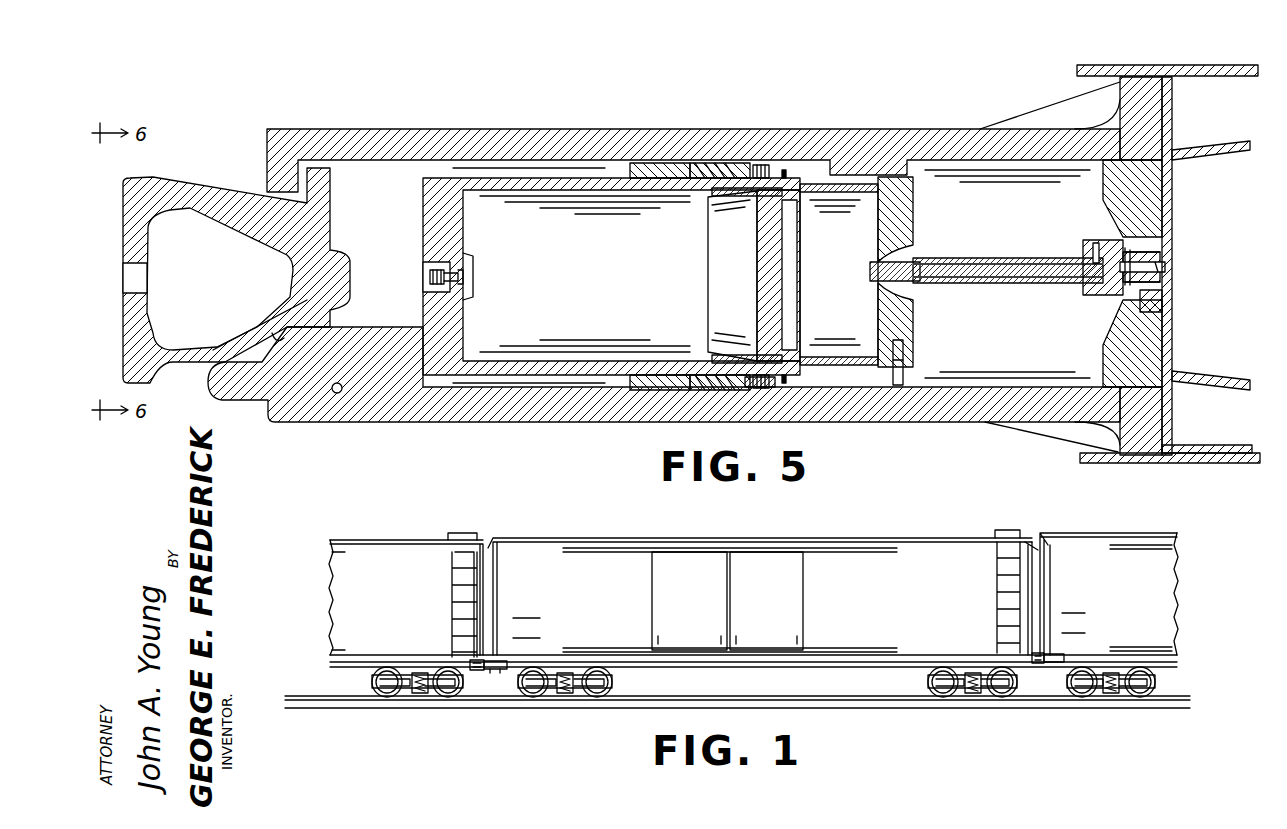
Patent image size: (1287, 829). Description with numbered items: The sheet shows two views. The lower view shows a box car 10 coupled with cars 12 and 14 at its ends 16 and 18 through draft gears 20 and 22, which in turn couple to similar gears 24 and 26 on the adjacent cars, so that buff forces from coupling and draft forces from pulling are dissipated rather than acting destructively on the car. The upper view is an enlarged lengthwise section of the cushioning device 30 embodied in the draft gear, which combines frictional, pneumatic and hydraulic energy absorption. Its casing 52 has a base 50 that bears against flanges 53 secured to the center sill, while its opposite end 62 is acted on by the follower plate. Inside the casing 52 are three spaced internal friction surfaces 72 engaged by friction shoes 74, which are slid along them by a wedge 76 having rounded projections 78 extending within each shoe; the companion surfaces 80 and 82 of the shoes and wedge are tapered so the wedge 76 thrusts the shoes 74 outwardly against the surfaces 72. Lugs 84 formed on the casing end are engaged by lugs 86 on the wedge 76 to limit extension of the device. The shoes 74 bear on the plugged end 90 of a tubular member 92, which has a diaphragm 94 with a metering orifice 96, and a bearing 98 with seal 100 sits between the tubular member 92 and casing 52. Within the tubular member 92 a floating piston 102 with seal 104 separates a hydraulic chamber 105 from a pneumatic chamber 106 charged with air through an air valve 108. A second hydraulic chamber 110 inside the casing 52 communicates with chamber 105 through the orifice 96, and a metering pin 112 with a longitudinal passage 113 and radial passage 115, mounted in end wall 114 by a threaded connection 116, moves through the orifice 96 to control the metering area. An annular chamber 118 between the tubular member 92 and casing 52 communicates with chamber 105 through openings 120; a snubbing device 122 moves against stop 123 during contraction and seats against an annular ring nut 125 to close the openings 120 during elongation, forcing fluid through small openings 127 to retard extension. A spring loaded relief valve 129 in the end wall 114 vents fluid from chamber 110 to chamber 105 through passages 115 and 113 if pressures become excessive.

In FIG. 1, the box car 10 is at (843, 566).
In FIG. 1, the car 12 is at (1088, 553).
In FIG. 1, the car 14 is at (385, 572).
In FIG. 1, the end 16 is at (517, 563).
In FIG. 1, the end 18 is at (968, 552).
In FIG. 1, the draft gear 20 is at (506, 668).
In FIG. 1, the draft gear 22 is at (1033, 662).
In FIG. 1, the gear 24 is at (473, 668).
In FIG. 1, the gear 26 is at (1058, 662).
In FIG. 5, the cushioning device 30 is at (526, 126).
In FIG. 5, the base 50 is at (1153, 130).
In FIG. 5, the casing 52 is at (538, 416).
In FIG. 5, the flanges 53 is at (1173, 113).
In FIG. 5, the end 62 is at (135, 180).
In FIG. 5, the friction surfaces 72 is at (331, 394).
In FIG. 5, the friction shoes 74 is at (267, 390).
In FIG. 5, the wedge 76 is at (169, 362).
In FIG. 5, the rounded projections 78 is at (257, 337).
In FIG. 5, the companion surface 80 is at (252, 366).
In FIG. 5, the companion surface 82 is at (282, 332).
In FIG. 5, the lugs 84 is at (272, 182).
In FIG. 5, the lugs 86 is at (312, 182).
In FIG. 5, the plugged end 90 is at (452, 330).
In FIG. 5, the tubular member 92 is at (565, 183).
In FIG. 5, the diaphragm 94 is at (898, 214).
In FIG. 5, the metering orifice 96 is at (903, 256).
In FIG. 5, the bearing 98 is at (697, 163).
In FIG. 5, the seal 100 is at (660, 168).
In FIG. 5, the floating piston 102 is at (768, 255).
In FIG. 5, the seal 104 is at (758, 188).
In FIG. 5, the hydraulic chamber 105 is at (835, 272).
In FIG. 5, the pneumatic chamber 106 is at (585, 274).
In FIG. 5, the air valve 108 is at (476, 272).
In FIG. 5, the variable volume chamber 110 is at (1007, 274).
In FIG. 5, the metering pin 112 is at (992, 283).
In FIG. 5, the longitudinal passage 113 is at (1037, 268).
In FIG. 5, the end wall 114 is at (1150, 196).
In FIG. 5, the radial passage 115 is at (1098, 245).
In FIG. 5, the threaded connection 116 is at (1162, 303).
In FIG. 5, the annular chamber 118 is at (786, 163).
In FIG. 5, the openings 120 is at (839, 274).
In FIG. 5, the snubbing device 122 is at (826, 186).
In FIG. 5, the stop 123 is at (758, 388).
In FIG. 5, the annular ring nut 125 is at (880, 142).
In FIG. 5, the small openings 127 is at (832, 392).
In FIG. 5, the spring loaded relief valve 129 is at (1162, 266).